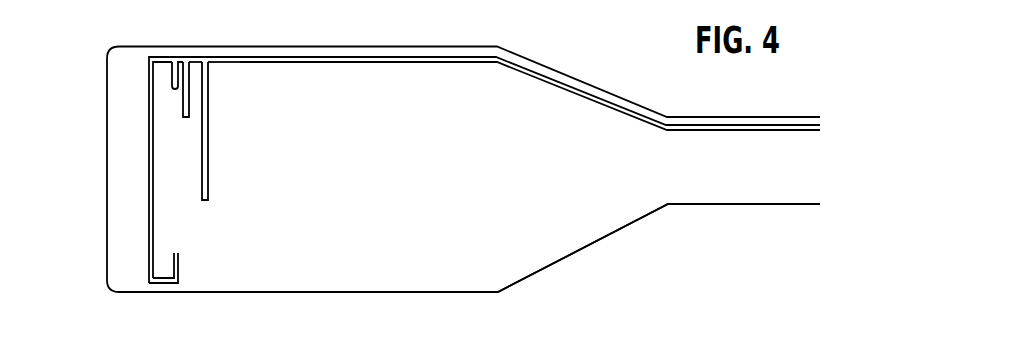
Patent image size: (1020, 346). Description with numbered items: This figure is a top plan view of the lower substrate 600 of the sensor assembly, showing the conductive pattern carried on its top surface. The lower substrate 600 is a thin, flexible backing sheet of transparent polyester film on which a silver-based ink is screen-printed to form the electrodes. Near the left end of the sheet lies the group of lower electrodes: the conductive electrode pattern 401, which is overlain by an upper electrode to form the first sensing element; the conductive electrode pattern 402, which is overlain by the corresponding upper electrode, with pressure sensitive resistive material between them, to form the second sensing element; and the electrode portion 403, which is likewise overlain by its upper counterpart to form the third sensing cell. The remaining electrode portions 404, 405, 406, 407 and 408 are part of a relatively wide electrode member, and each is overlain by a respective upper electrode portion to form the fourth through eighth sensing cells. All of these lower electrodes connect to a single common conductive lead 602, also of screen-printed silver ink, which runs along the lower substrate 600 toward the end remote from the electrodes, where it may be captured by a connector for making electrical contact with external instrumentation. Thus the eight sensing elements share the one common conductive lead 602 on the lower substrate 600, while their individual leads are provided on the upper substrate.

The conductive electrode pattern 401 is at (178, 258).
The conductive electrode pattern 402 is at (183, 107).
The electrode portion 403 is at (163, 73).
The electrode portion 404 is at (208, 189).
The electrode portion 405 is at (208, 161).
The electrode portion 406 is at (208, 140).
The electrode portion 407 is at (208, 108).
The electrode portion 408 is at (213, 76).
The lower substrate 600 is at (597, 227).
The conductive lead 602 is at (577, 90).